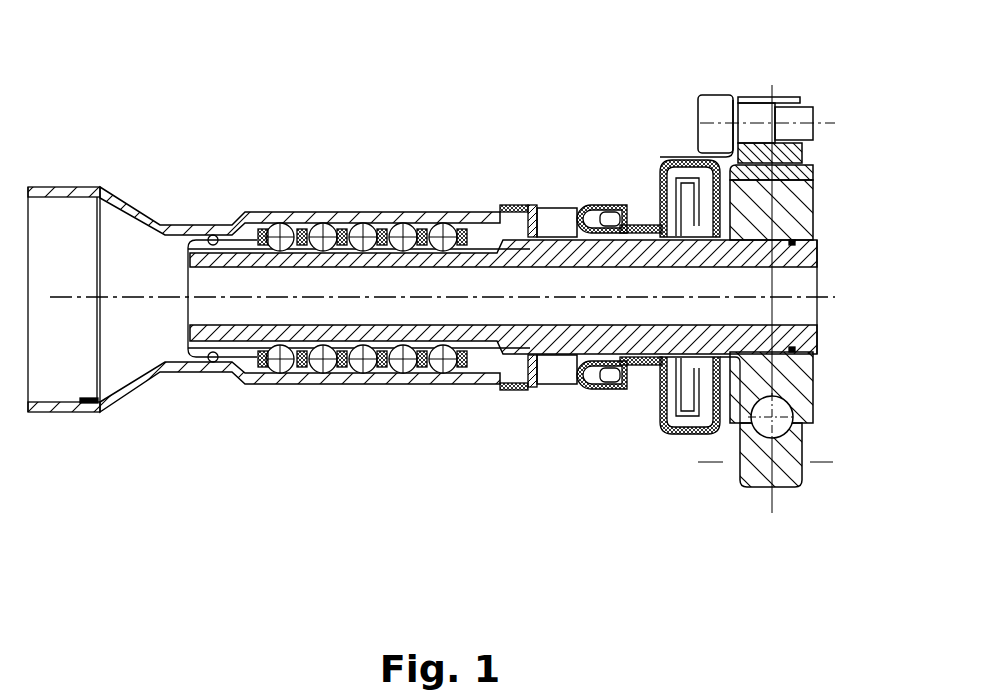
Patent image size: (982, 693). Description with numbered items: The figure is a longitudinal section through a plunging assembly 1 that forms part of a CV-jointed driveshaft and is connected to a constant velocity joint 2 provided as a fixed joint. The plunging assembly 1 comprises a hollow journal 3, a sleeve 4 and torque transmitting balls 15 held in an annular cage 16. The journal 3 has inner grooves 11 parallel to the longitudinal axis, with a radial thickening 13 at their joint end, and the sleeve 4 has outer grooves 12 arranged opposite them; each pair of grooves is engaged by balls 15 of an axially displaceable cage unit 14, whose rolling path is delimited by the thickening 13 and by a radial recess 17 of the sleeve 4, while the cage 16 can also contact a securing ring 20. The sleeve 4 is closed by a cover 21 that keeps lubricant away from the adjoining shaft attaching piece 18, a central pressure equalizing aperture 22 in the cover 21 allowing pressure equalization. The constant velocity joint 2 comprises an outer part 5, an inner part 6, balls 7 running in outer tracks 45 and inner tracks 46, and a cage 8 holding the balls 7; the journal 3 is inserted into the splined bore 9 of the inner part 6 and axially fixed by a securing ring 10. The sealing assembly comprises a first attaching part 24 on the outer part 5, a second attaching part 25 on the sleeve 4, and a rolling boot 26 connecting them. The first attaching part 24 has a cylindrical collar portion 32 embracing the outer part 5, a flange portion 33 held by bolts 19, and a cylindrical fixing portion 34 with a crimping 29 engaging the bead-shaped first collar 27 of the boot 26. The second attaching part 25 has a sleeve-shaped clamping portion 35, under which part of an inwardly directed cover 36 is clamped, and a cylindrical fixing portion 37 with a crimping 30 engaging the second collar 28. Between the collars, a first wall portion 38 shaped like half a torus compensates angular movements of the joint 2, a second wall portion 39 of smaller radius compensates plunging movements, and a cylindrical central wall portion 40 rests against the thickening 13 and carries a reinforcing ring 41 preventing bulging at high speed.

The plunging assembly 1 is at (404, 146).
The constant velocity joint 2 is at (826, 209).
The journal 3 is at (262, 253).
The sleeve 4 is at (458, 205).
The outer part 5 is at (805, 153).
The inner part 6 is at (808, 222).
The balls 7 is at (805, 457).
The cage 8 is at (805, 177).
The bore 9 is at (822, 298).
The securing ring 10 is at (812, 343).
The inner grooves 11 is at (237, 247).
The outer grooves 12 is at (477, 205).
The radial thickening 13 is at (537, 390).
The cage unit 14 is at (343, 220).
The balls 15 is at (365, 232).
The cage 16 is at (425, 200).
The radial recess 17 is at (177, 227).
The shaft attaching piece 18 is at (55, 188).
The bolts 19 is at (805, 120).
The securing ring 20 is at (207, 236).
The cover 21 is at (92, 216).
The pressure equalizing aperture 22 is at (96, 296).
The first attaching part 24 is at (721, 444).
The second attaching part 25 is at (548, 400).
The rolling boot 26 is at (640, 203).
The first collar 27 is at (670, 430).
The second collar 28 is at (610, 390).
The crimping 29 is at (668, 162).
The crimping 30 is at (605, 205).
The cylindrical collar portion 32 is at (785, 97).
The flange portion 33 is at (738, 98).
The cylindrical fixing portion 34 is at (712, 97).
The sleeve-shaped clamping portion 35 is at (515, 205).
The cover 36 is at (555, 208).
The cylindrical fixing portion 37 is at (580, 205).
The first wall portion 38 is at (700, 435).
The second wall portion 39 is at (575, 390).
The central wall portion 40 is at (645, 367).
The reinforcing ring 41 is at (640, 385).
The outer tracks 45 is at (800, 420).
The inner tracks 46 is at (790, 408).